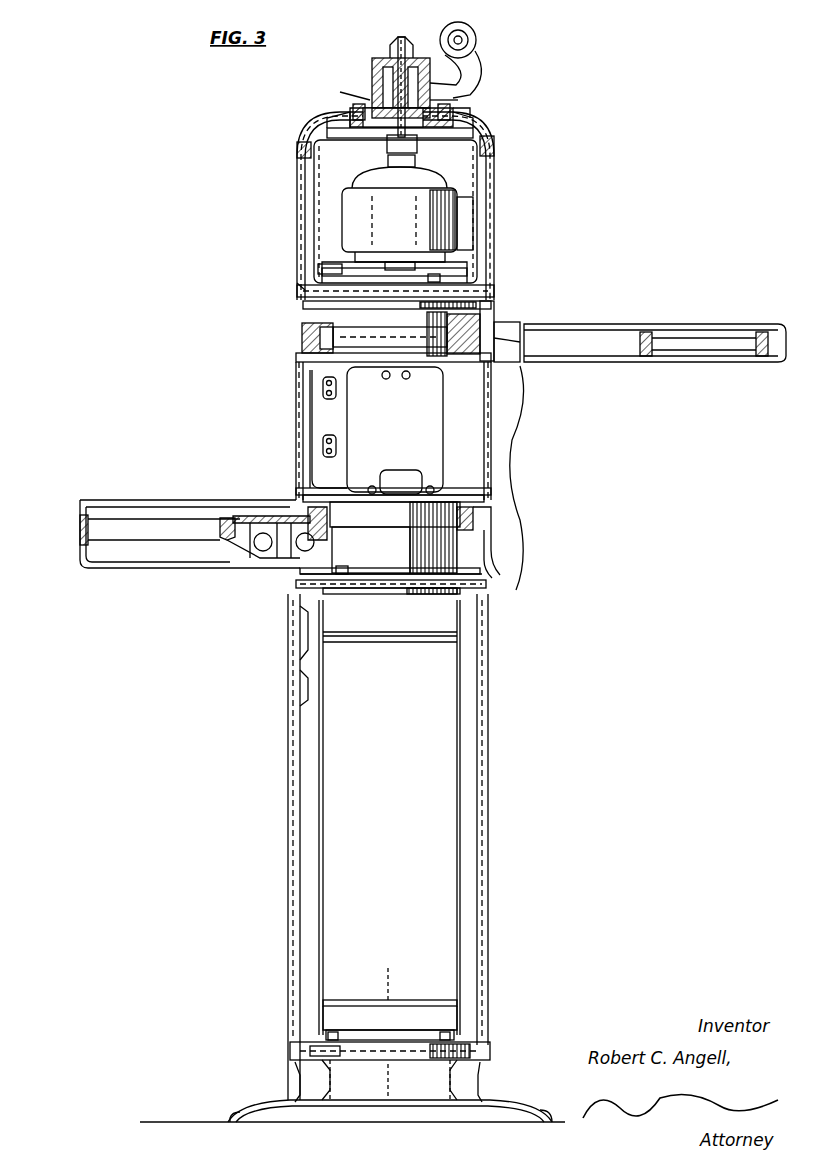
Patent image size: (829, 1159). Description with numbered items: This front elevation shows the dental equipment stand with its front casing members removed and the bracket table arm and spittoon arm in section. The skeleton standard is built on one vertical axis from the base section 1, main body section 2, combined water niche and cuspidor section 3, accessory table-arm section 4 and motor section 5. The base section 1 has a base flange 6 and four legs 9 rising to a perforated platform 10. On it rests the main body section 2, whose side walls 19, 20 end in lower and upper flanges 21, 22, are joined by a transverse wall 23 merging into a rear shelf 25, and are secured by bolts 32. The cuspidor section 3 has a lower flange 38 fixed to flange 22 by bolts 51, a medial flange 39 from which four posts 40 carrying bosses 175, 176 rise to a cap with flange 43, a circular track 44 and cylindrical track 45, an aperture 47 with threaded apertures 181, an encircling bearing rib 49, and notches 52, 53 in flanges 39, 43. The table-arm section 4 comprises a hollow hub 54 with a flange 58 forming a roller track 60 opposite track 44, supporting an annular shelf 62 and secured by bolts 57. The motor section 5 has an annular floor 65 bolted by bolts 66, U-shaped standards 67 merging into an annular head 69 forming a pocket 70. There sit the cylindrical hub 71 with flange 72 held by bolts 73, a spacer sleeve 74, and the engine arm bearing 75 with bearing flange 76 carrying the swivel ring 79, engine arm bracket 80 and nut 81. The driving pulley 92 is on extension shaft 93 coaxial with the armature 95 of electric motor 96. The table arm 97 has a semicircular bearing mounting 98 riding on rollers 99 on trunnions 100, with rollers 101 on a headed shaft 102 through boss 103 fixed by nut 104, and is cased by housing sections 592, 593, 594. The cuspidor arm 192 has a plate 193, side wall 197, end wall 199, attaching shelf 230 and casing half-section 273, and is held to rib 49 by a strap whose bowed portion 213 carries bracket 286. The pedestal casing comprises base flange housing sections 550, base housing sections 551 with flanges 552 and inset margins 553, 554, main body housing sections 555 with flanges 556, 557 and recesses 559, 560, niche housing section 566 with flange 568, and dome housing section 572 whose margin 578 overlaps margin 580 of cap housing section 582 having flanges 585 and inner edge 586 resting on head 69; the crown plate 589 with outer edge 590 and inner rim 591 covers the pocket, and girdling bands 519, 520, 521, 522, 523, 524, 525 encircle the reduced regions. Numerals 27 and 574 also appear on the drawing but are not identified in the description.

The base section 1 is at (383, 1081).
The main body section 2 is at (298, 830).
The combined water niche and cuspidor section 3 is at (528, 478).
The accessory table-arm section 4 is at (496, 326).
The motor section 5 is at (316, 230).
The base flange 6 is at (535, 1118).
The legs 9 is at (318, 1078).
The perforated elevated plate or platform 10 is at (288, 1058).
The side wall 19 is at (318, 776).
The side wall 20 is at (460, 776).
The lower annular flange 21 is at (390, 1020).
The upper annular flange 22 is at (358, 590).
The transverse wall 23 is at (383, 839).
The shelf 25 is at (383, 982).
The ring 27 is at (452, 624).
The bolts 32 is at (328, 1032).
The lower annular horizontal flange 38 is at (412, 594).
The medial flange 39 is at (355, 492).
The posts or standards 40 is at (346, 424).
The flange 43 is at (300, 360).
The circular horizontal track 44 is at (368, 366).
The cylindrical track 45 is at (460, 354).
The aperture 47 is at (396, 488).
The bearing rib 49 is at (390, 527).
The bolts 51 is at (350, 570).
The notches or slots 52 is at (296, 495).
The notches or slots 53 is at (502, 364).
The hollow circular hub 54 is at (406, 380).
The bolts 57 is at (297, 288).
The horizontal flange 58 is at (304, 318).
The circular roller bearing track 60 is at (437, 356).
The annular shelf 62 is at (490, 300).
The annular floor 65 is at (478, 290).
The bolts 66 is at (440, 278).
The U-shaped standards 67 is at (318, 242).
The annular head 69 is at (496, 120).
The pocket 70 is at (350, 114).
The cylindrical hub 71 is at (372, 100).
The flange 72 is at (340, 116).
The bolts 73 is at (330, 133).
The spacer sleeve 74 is at (470, 108).
The engine arm bearing 75 is at (372, 64).
The bearing flange 76 is at (356, 106).
The swivel ring 79 is at (470, 86).
The engine arm supporting bracket 80 is at (482, 70).
The nut 81 is at (477, 46).
The dental engine driving pulley 92 is at (395, 58).
The driving pulley extension shaft 93 is at (407, 56).
The armature 95 is at (476, 236).
The electric motor 96 is at (392, 219).
The accessory table arm 97 is at (618, 356).
The bearing mounting 98 is at (304, 332).
The supporting rollers 99 is at (336, 342).
The headed trunnions 100 is at (310, 340).
The rollers 101 is at (520, 358).
The headed shaft 102 is at (515, 342).
The boss 103 is at (500, 332).
The nut 104 is at (494, 316).
The boss 175 is at (323, 386).
The boss 176 is at (323, 446).
The threaded apertures 181 is at (400, 470).
The cuspidor supporting arm 192 is at (126, 507).
The frame plate 193 is at (265, 516).
The side wall 197 is at (178, 519).
The semicylindrical end wall 199 is at (80, 528).
The bowed portion 213 is at (500, 575).
The attaching shelf 230 is at (224, 542).
The casing half-section 273 is at (148, 568).
The bracket 286 is at (492, 586).
The girdling band 519 is at (305, 152).
The girdling band 520 is at (297, 296).
The girdling band 521 is at (300, 358).
The girdling band 522 is at (300, 508).
The girdling band 523 is at (300, 572).
The girdling band 524 is at (490, 1048).
The girdling band 525 is at (500, 1110).
The base flange housing sections 550 is at (262, 1112).
The base housing sections 551 is at (486, 1088).
The inturned lateral edge flanges 552 is at (288, 1070).
The semicylindrical margin 553 is at (300, 1092).
The semicylindrical margin 554 is at (288, 1050).
The housing sections 555 is at (488, 862).
The inturned flange 556 is at (290, 942).
The inturned flange 557 is at (480, 942).
The semicircular recess 559 is at (298, 618).
The semicircular recess 560 is at (298, 680).
The housing section 566 is at (312, 438).
The inturned lateral marginal flange 568 is at (310, 406).
The housing section 572 is at (300, 200).
The liner 574 is at (303, 178).
The upper semicircular margin 578 is at (386, 150).
The inset margin 580 is at (297, 150).
The cap housing section 582 is at (496, 140).
The inturned flanges 585 is at (322, 122).
The semicircular inner edges 586 is at (494, 152).
The annular crown plate 589 is at (342, 108).
The outer peripheral edge 590 is at (508, 116).
The inner rim 591 is at (340, 92).
The main housing section 592 is at (625, 330).
The inner end section 593 is at (300, 326).
The outer end section 594 is at (782, 330).